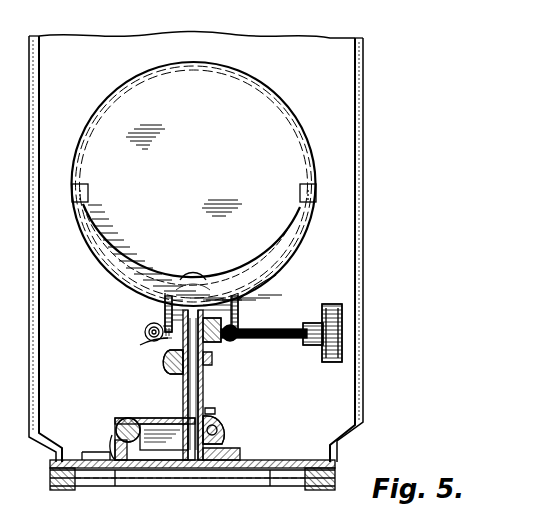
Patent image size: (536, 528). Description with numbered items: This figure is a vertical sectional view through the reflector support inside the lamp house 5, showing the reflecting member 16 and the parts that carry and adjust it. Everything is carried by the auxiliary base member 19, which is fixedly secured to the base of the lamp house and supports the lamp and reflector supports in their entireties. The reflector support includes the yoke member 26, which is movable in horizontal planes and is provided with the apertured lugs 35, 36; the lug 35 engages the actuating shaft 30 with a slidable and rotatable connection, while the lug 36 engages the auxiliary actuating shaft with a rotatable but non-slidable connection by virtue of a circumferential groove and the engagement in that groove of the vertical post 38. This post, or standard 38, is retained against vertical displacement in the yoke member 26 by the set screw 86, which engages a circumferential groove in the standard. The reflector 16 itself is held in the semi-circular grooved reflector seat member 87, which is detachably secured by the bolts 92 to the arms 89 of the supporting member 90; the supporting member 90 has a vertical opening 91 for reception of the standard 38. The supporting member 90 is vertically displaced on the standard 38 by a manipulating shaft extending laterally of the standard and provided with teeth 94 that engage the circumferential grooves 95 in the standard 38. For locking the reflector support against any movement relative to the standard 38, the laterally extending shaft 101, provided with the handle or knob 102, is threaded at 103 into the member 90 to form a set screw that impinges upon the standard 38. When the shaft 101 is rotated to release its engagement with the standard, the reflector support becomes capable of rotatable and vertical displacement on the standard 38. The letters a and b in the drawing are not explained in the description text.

The lamp house 5 is at (345, 167).
The reflecting member 16 is at (268, 116).
The auxiliary base member 19 is at (102, 458).
The yoke member 26 is at (158, 424).
The actuating shaft 30 is at (128, 418).
The apertured lug 35 is at (115, 420).
The apertured lug 36 is at (238, 452).
The vertical post 38 is at (203, 402).
The set screw 86 is at (224, 418).
The reflector seat member 87 is at (272, 282).
The arms 89 is at (212, 318).
The supporting member 90 is at (232, 341).
The vertical opening 91 is at (140, 345).
The bolts 92 is at (146, 326).
The teeth 94 is at (167, 362).
The circumferential grooves 95 is at (210, 362).
The laterally extending shaft 101 is at (282, 340).
The handle or knob 102 is at (340, 309).
The threaded portion 103 is at (250, 322).
The nut a is at (222, 430).
The bearing lip b is at (116, 426).